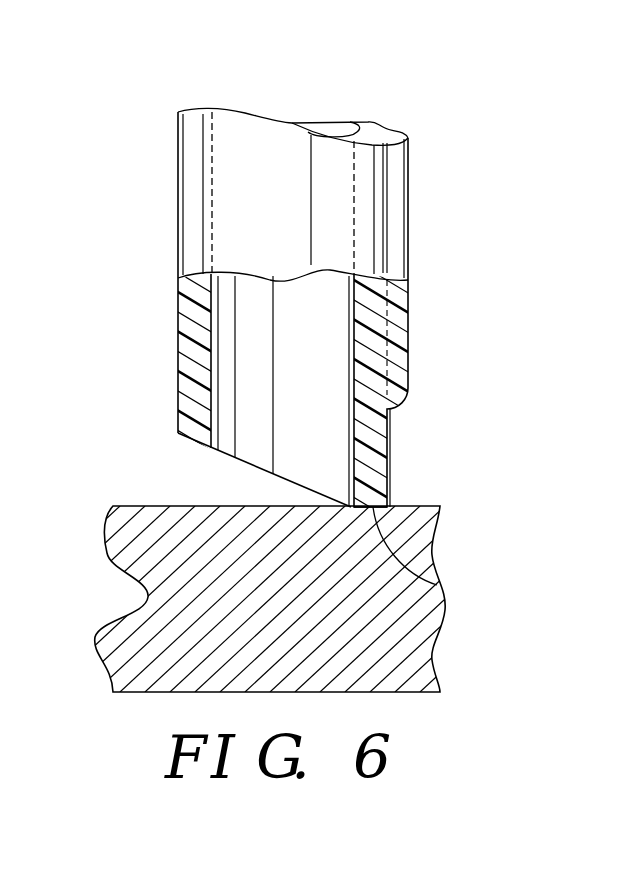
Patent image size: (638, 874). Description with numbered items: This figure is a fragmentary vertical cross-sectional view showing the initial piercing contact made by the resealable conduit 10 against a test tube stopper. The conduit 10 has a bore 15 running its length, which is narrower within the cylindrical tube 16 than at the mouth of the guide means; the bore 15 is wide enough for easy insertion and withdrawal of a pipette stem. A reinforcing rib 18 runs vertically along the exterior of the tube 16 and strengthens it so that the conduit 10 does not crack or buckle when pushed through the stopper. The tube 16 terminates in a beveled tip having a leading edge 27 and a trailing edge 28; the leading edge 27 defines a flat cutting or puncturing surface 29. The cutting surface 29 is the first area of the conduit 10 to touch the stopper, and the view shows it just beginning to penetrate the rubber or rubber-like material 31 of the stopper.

The resealable conduit 10 is at (162, 215).
The bore 15 is at (232, 338).
The cylindrical tube 16 is at (178, 361).
The reinforcing rib 18 is at (408, 323).
The leading edge 27 is at (393, 507).
The trailing edge 28 is at (178, 433).
The cutting surface 29 is at (437, 585).
The rubber or rubber-like material 31 is at (432, 557).